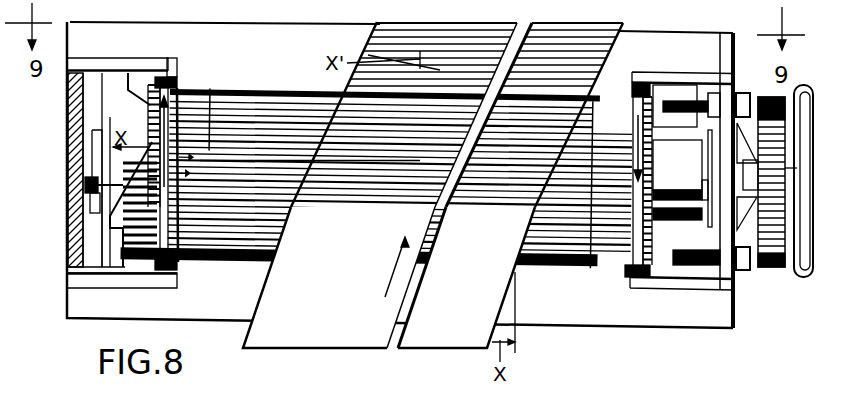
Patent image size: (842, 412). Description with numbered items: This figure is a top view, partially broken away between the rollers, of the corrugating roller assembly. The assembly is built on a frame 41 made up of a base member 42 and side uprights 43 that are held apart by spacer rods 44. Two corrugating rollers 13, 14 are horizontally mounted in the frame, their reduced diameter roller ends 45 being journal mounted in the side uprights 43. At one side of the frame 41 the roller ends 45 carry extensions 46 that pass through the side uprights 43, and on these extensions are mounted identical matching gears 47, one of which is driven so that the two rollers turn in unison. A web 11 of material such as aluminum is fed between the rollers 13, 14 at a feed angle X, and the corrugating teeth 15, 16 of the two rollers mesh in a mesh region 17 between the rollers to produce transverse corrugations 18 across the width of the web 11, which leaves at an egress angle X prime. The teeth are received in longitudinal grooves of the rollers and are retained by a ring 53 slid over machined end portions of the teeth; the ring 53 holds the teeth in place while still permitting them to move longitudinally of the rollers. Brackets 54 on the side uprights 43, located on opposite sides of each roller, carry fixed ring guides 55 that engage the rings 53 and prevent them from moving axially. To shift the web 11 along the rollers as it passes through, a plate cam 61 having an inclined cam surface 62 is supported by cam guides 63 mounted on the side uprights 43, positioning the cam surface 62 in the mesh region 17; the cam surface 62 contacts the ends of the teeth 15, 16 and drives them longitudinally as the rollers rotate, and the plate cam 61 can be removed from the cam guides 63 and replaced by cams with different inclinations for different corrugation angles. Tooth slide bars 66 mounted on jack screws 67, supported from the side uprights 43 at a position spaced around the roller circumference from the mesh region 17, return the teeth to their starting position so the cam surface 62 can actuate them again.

The web 11 is at (407, 346).
The corrugating roller 13 is at (517, 272).
The corrugating roller 14 is at (256, 88).
The corrugating teeth 15 is at (653, 188).
The corrugating teeth 16 is at (147, 148).
The mesh region 17 is at (279, 158).
The transverse corrugations 18 is at (377, 36).
The frame 41 is at (703, 362).
The base member 42 is at (675, 320).
The side uprights 43 is at (723, 87).
The spacer rods 44 is at (743, 264).
The roller ends 45 is at (710, 224).
The extensions 46 is at (757, 160).
The gears 47 is at (773, 268).
The ring 53 is at (181, 87).
The brackets 54 is at (698, 280).
The ring guides 55 is at (628, 270).
The plate cam 61 is at (125, 84).
The cam surface 62 is at (86, 190).
The cam guides 63 is at (98, 275).
The tooth slide bars 66 is at (678, 118).
The jack screws 67 is at (692, 100).